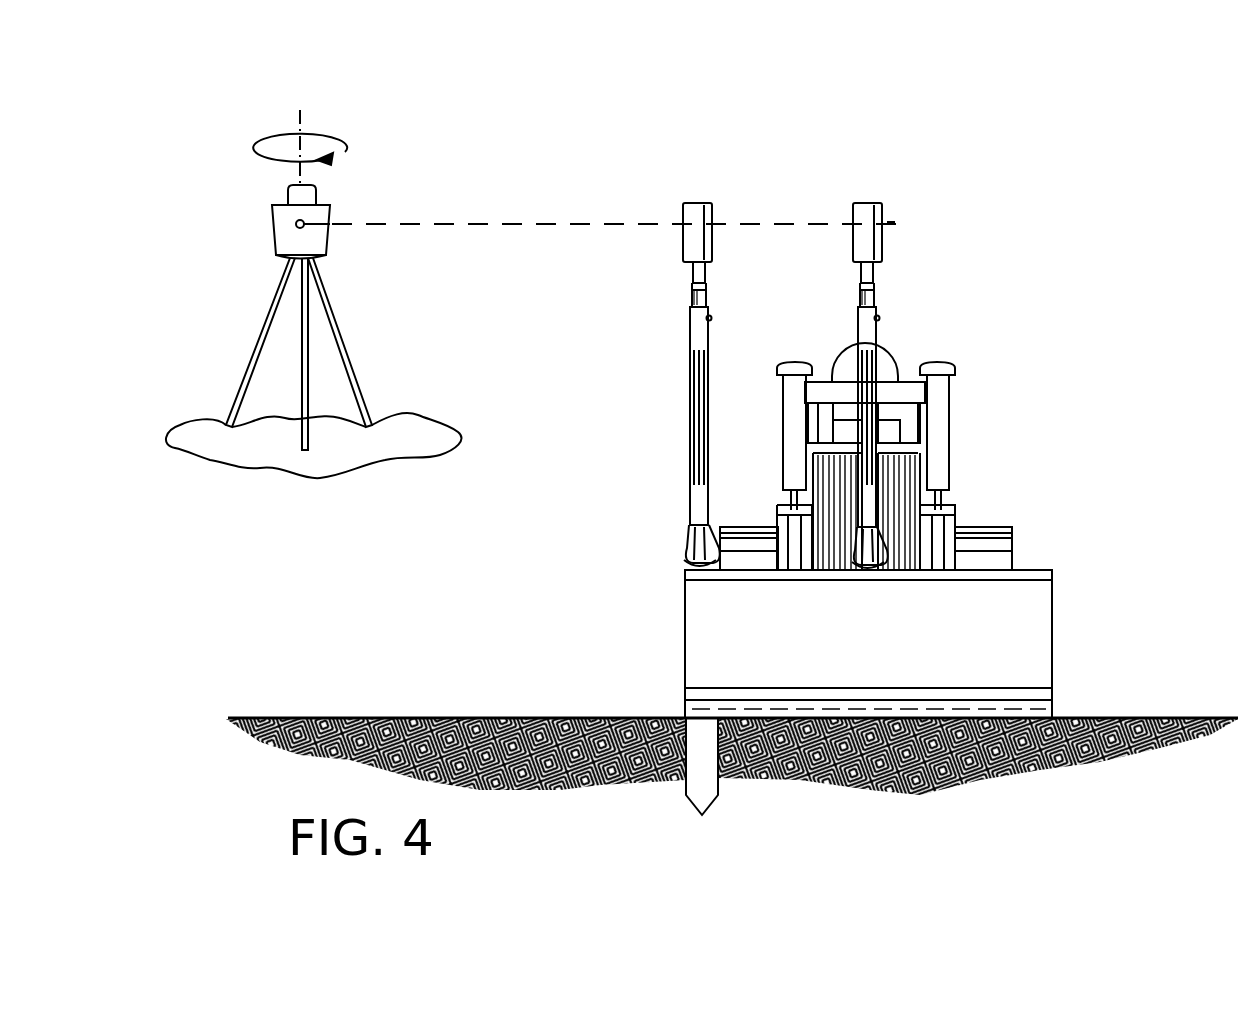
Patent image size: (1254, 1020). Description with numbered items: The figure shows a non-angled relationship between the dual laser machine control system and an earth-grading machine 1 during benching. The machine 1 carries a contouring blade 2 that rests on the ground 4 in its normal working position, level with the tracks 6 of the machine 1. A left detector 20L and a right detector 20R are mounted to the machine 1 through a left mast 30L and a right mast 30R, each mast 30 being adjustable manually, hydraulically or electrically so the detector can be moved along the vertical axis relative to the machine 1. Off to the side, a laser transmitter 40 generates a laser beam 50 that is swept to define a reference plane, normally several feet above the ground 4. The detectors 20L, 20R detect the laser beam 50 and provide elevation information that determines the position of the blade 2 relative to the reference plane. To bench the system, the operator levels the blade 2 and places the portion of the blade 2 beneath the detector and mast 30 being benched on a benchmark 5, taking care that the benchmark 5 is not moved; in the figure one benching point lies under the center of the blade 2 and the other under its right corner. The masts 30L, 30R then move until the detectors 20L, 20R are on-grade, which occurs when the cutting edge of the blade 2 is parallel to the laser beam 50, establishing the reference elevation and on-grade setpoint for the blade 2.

The earth-grading machine 1 is at (1017, 440).
The contouring blade 2 is at (1037, 620).
The ground 4 is at (1167, 716).
The benchmark 5 is at (708, 786).
The tracks 6 is at (750, 526).
The right detector 20R is at (686, 245).
The left detector 20L is at (881, 243).
The mast 30 is at (690, 331).
The right mast 30R is at (690, 405).
The left mast 30L is at (872, 334).
The laser transmitter 40 is at (275, 222).
The laser beam 50 is at (455, 222).